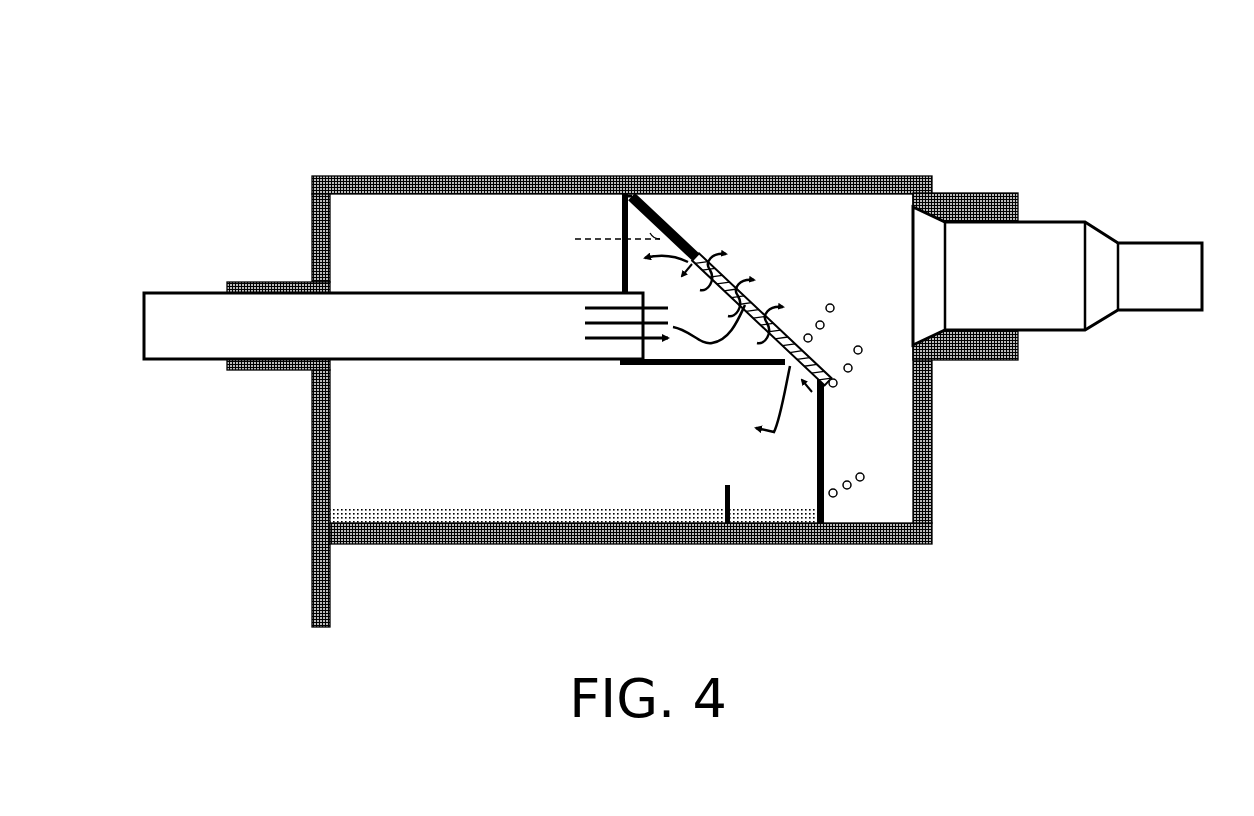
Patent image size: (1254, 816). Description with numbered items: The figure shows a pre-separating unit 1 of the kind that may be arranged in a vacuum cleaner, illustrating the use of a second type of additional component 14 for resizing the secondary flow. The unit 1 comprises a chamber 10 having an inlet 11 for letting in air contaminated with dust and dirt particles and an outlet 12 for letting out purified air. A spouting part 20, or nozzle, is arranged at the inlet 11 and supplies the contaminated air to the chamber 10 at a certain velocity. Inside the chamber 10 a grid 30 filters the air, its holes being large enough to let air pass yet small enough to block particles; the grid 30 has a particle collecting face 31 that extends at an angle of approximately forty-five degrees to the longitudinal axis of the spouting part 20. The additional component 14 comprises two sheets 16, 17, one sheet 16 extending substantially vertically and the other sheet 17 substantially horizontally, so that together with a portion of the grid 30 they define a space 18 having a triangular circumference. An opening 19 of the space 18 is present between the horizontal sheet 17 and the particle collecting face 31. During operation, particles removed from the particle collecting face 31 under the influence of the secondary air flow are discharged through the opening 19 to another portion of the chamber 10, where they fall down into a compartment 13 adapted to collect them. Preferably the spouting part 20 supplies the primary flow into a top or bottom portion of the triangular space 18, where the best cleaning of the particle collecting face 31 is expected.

The pre-separating unit 1 is at (1085, 115).
The chamber 10 is at (377, 177).
The inlet 11 is at (270, 282).
The outlet 12 is at (1048, 328).
The compartment 13 is at (430, 510).
The additional component 14 is at (620, 206).
The sheet 16 is at (620, 268).
The sheet 17 is at (702, 365).
The space 18 is at (700, 264).
The opening 19 is at (823, 398).
The spouting part 20 is at (486, 300).
The grid 30 is at (652, 230).
The particle collecting face 31 is at (773, 325).